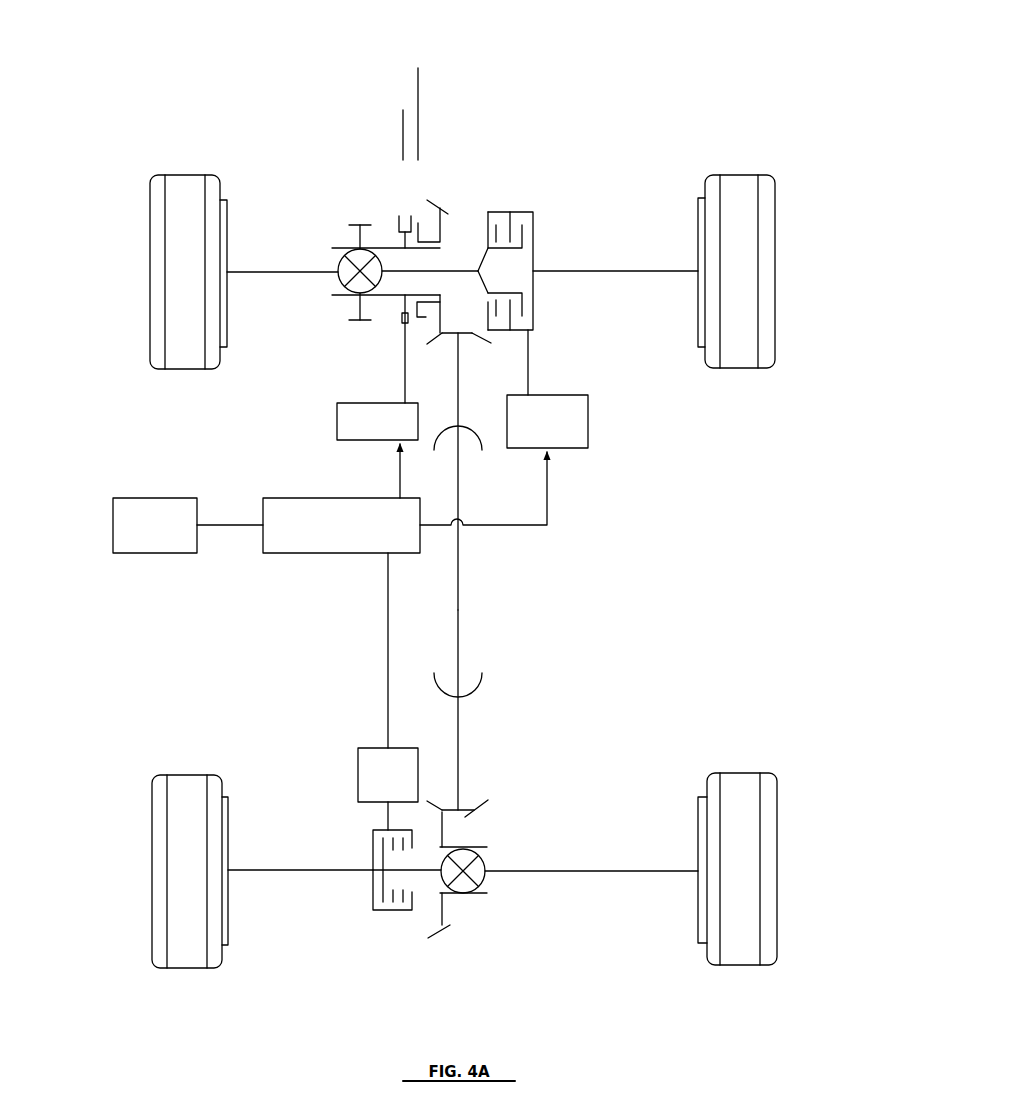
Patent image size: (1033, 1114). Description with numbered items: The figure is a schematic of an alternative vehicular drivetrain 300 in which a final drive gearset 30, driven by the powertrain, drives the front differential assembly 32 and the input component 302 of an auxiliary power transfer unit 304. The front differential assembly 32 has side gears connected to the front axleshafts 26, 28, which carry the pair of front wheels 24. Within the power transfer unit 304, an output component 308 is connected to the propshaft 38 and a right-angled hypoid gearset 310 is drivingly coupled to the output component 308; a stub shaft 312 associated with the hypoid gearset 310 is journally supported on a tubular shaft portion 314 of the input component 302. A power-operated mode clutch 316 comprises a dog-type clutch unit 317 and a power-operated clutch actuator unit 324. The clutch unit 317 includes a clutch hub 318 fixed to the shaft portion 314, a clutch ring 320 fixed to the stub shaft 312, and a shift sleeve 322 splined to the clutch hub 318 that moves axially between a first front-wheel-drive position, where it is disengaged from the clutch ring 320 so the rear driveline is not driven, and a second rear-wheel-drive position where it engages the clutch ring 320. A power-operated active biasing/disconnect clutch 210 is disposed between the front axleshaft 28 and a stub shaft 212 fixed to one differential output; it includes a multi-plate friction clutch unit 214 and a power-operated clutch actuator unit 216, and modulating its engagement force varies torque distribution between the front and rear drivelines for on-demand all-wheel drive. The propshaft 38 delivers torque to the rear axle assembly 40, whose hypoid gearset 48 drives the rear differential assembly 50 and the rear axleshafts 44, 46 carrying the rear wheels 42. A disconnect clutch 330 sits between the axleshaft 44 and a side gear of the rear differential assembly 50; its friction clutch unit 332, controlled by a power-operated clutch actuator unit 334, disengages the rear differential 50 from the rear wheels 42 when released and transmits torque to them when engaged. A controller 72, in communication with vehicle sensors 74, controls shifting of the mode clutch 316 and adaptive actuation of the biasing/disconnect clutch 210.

The vehicular drivetrain 300 is at (705, 82).
The front wheels 24 is at (150, 272).
The front axleshaft 26 is at (324, 270).
The front axleshaft 28 is at (600, 271).
The input component 302 is at (377, 240).
The final drive gearset 30 is at (352, 322).
The front differential assembly 32 is at (336, 307).
The clutch hub 318 is at (399, 243).
The stub shaft 312 is at (436, 240).
The right-angled hypoid gearset 310 is at (441, 196).
The auxiliary power transfer unit 304 is at (454, 230).
The stub shaft 212 is at (457, 270).
The multi-plate friction clutch unit 214 is at (539, 202).
The active biasing/disconnect clutch 210 is at (552, 330).
The power-operated clutch actuator unit 216 is at (504, 460).
The shift sleeve 322 is at (400, 318).
The dog-type clutch unit 317 is at (391, 340).
The tubular shaft portion 314 is at (448, 334).
The clutch ring 320 is at (439, 303).
The output component 308 is at (458, 384).
The power-operated mode clutch 316 is at (336, 383).
The power-operated clutch actuator unit 324 is at (377, 450).
The controller 72 is at (341, 525).
The vehicle sensors 74 is at (188, 525).
The propshaft 38 is at (458, 612).
The disconnect clutch 330 is at (313, 749).
The power-operated clutch actuator unit 334 is at (388, 789).
The friction clutch unit 332 is at (378, 908).
The rear axleshaft 44 is at (338, 870).
The rear axleshaft 46 is at (560, 871).
The hypoid gearset 48 is at (483, 788).
The rear axle assembly 40 is at (546, 833).
The rear differential assembly 50 is at (501, 892).
The rear wheels 42 is at (152, 870).